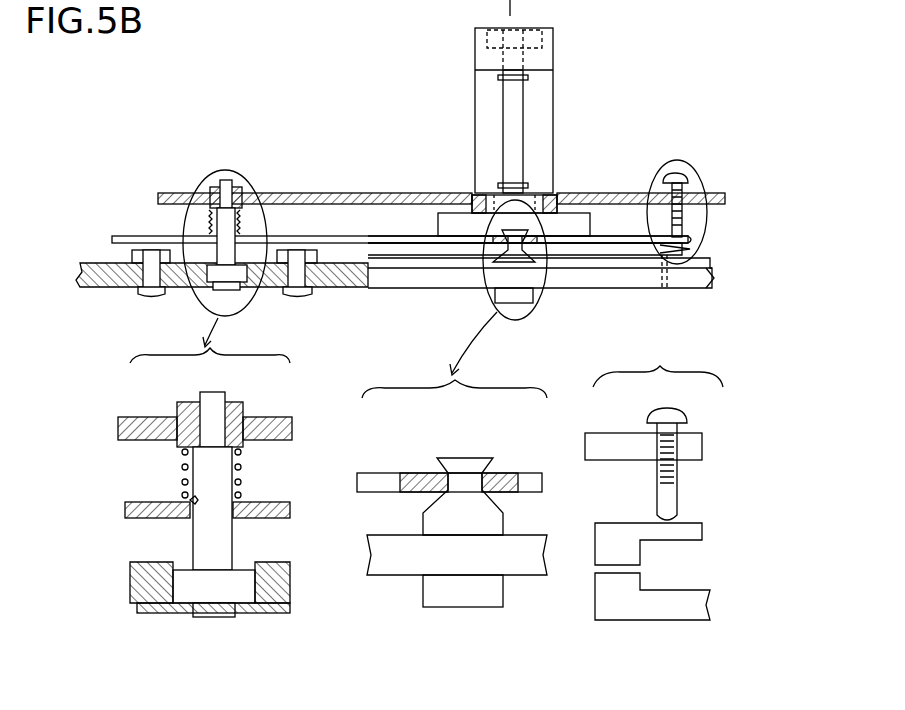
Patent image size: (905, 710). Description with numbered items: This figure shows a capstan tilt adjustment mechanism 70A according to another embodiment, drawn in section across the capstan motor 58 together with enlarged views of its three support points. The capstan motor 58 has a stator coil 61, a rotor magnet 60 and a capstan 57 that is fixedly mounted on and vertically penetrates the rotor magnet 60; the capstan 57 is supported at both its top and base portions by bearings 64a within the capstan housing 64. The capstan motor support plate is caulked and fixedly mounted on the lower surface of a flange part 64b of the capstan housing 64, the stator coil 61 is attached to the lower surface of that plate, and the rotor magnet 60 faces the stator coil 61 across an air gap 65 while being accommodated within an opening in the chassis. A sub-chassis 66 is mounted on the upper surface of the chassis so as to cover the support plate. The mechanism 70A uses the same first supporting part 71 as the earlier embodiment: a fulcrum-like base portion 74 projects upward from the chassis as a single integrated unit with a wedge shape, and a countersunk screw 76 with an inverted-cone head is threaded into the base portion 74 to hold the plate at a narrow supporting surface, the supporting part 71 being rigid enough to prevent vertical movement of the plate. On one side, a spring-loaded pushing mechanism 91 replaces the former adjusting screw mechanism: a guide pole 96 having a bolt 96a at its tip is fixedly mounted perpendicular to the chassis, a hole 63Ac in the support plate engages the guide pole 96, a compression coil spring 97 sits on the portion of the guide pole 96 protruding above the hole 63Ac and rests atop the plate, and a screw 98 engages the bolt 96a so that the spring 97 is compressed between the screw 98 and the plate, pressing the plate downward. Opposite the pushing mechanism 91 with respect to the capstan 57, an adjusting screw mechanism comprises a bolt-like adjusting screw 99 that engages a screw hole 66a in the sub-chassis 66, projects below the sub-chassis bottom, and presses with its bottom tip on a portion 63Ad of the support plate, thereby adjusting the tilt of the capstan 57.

The capstan 57 is at (525, 115).
The capstan motor 58 is at (740, 210).
The rotor magnet 60 is at (684, 250).
The stator coil 61 is at (690, 236).
The hole 63Ac is at (187, 497).
The portion of the capstan motor support plate 63Ad is at (690, 530).
The capstan housing 64 is at (553, 128).
The bearings 64a is at (487, 38).
The flange part 64b is at (590, 223).
The air gap 65 is at (660, 290).
The sub-chassis 66 is at (697, 196).
The screw hole 66a is at (676, 478).
The capstan tilt adjustment mechanism 70A is at (690, 48).
The first supporting part 71 is at (458, 194).
The base portion 74 is at (483, 523).
The countersunk screw 76 is at (448, 458).
The spring-loaded pushing mechanism 91 is at (208, 166).
The guide pole 96 is at (207, 528).
The bolt 96a is at (212, 396).
The compression coil spring 97 is at (182, 467).
The screw 98 is at (243, 418).
The adjusting screw 99 is at (680, 175).